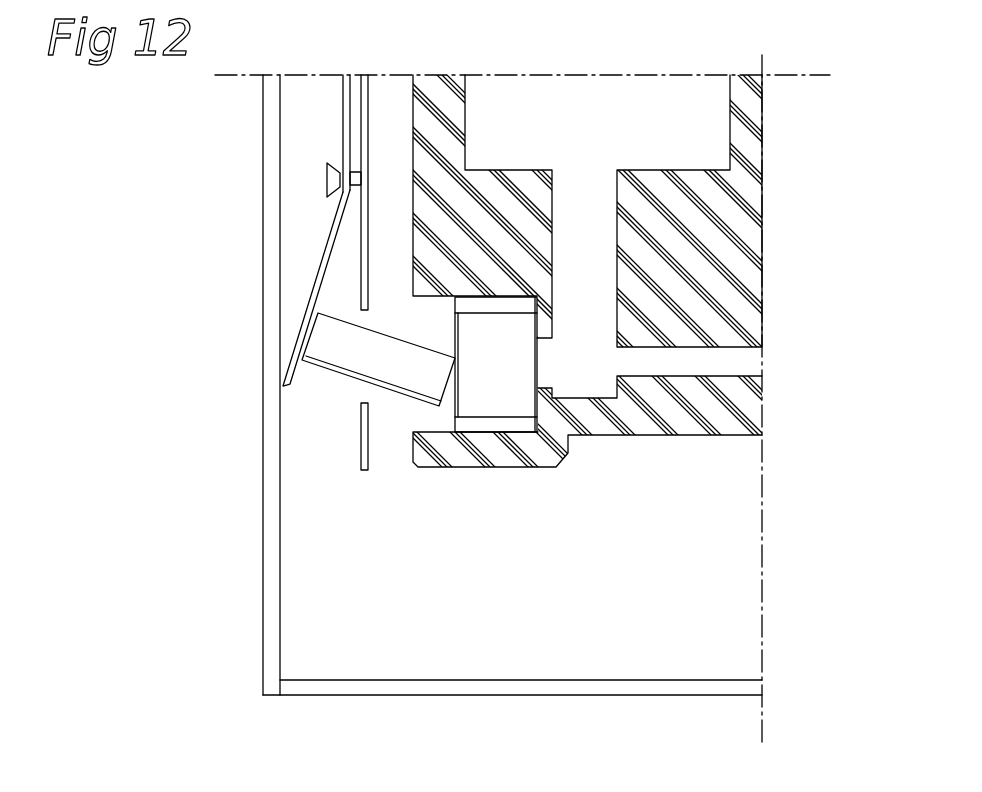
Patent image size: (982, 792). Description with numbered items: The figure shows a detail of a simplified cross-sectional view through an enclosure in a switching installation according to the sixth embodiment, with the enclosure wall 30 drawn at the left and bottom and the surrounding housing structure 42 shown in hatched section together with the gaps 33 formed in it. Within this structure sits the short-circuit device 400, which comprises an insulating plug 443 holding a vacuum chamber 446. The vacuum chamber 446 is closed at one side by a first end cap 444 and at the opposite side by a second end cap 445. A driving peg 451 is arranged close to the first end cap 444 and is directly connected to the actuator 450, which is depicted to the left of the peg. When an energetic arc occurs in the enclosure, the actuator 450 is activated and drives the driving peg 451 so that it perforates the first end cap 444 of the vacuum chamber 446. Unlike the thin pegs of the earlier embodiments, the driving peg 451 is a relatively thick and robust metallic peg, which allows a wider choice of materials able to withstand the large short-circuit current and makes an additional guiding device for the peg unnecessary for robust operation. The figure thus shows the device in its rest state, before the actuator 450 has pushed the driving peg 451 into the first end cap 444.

The housing 30 is at (272, 497).
The valve body block 42 is at (505, 193).
The gaps / channels 33 is at (545, 365).
The short-circuit device 400 is at (412, 420).
The insulating plug 443 is at (548, 352).
The first end cap 444 is at (452, 327).
The second end cap 445 is at (533, 373).
The vacuum chamber 446 is at (485, 372).
The actuator 450 is at (332, 226).
The driving peg 451 is at (358, 365).